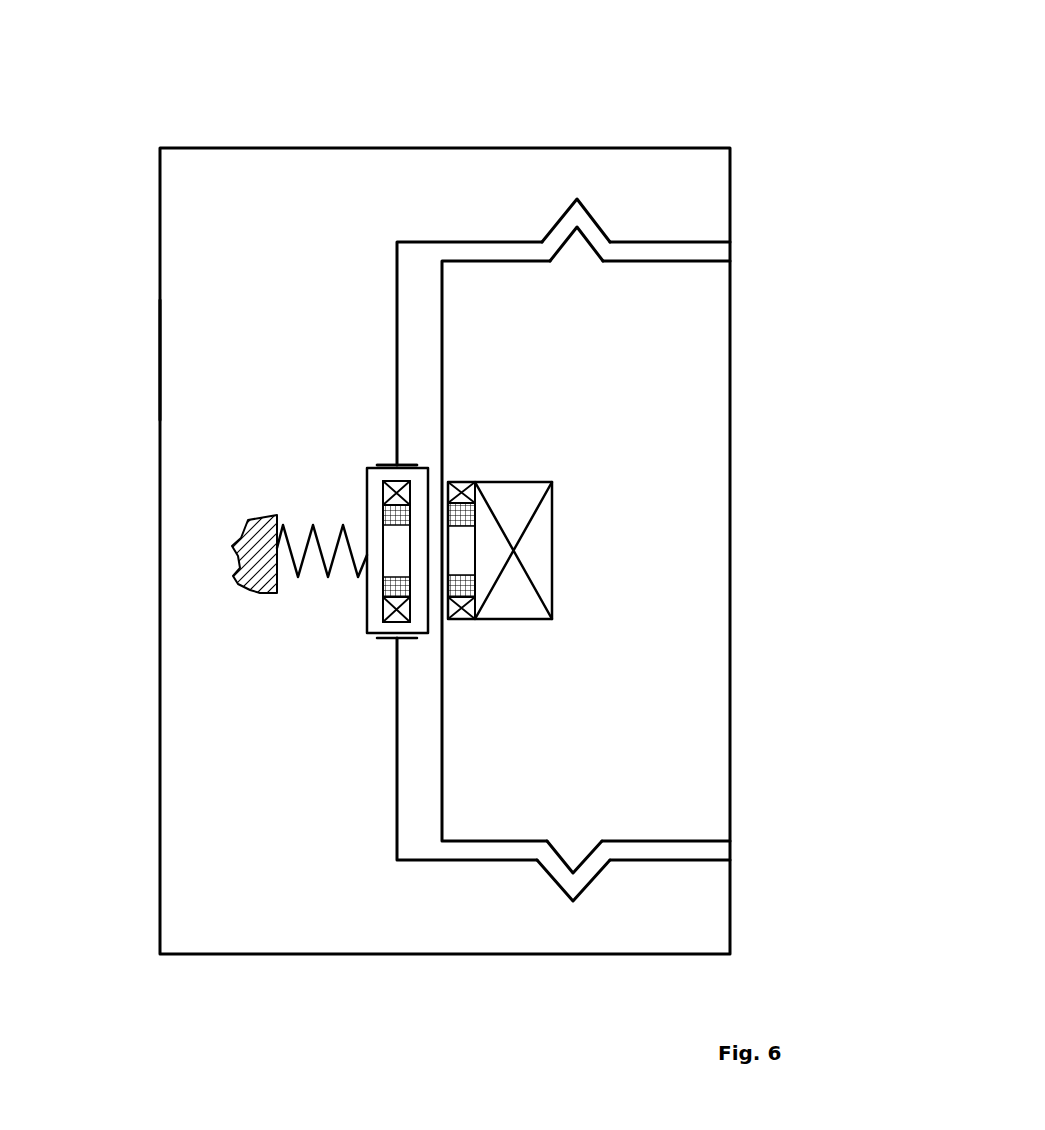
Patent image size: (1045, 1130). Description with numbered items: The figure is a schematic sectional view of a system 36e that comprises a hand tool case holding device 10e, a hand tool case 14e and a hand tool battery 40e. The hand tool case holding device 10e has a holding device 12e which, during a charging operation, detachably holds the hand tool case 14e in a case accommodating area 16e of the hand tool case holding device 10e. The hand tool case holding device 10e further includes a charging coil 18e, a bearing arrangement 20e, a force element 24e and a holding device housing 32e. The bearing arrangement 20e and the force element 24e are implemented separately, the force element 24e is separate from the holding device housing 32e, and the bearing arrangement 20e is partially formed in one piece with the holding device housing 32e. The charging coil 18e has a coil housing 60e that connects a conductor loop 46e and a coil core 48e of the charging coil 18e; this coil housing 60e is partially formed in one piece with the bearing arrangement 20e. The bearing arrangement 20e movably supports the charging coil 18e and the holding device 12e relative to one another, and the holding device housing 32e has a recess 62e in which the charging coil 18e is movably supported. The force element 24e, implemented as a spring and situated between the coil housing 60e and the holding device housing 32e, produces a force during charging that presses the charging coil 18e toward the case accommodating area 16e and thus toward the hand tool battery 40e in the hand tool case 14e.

The hand tool case holding device 10e is at (248, 170).
The holding device 12e is at (577, 186).
The hand tool case 14e is at (708, 298).
The case accommodating area 16e is at (742, 377).
The charging coil 18e is at (332, 565).
The bearing arrangement 20e is at (360, 662).
The force element 24e is at (286, 594).
The holding device housing 32e is at (160, 360).
The system 36e is at (686, 85).
The hand tool battery 40e is at (538, 549).
The conductor loop 46e is at (383, 607).
The coil core 48e is at (385, 585).
The coil housing 60e is at (370, 465).
The recess 62e is at (341, 557).